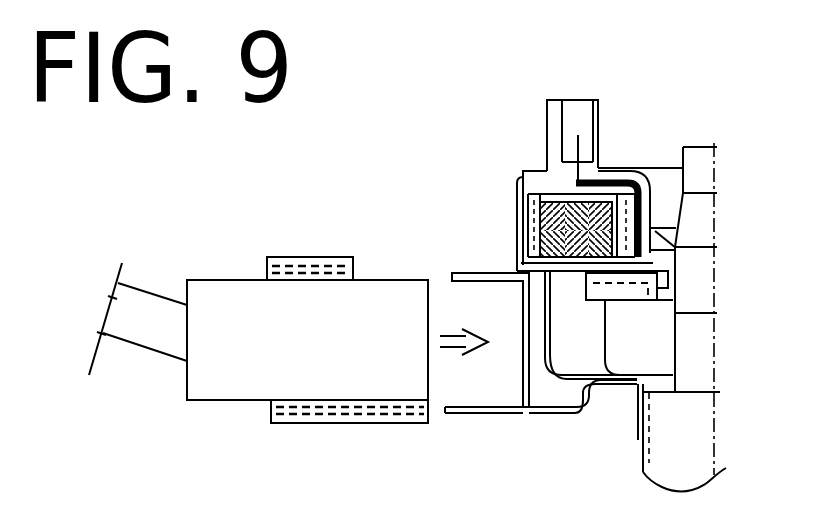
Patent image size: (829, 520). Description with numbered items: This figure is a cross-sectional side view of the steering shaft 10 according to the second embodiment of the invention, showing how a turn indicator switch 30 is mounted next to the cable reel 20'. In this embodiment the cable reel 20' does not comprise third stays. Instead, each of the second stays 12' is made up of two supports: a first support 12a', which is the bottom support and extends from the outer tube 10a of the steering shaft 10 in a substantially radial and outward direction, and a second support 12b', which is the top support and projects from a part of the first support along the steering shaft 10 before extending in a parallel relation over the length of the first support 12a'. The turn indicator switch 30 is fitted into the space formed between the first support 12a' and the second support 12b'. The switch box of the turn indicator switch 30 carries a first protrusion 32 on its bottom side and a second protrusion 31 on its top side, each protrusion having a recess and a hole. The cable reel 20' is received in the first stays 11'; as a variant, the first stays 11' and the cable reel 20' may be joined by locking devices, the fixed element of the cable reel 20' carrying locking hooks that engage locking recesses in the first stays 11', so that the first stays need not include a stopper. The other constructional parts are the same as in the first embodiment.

The steering shaft 10 is at (711, 330).
The outer tube 10a is at (650, 443).
The first stays 11' is at (626, 323).
The second stays 12' is at (587, 373).
The first support 12a' is at (540, 428).
The second support 12b' is at (477, 295).
The cable reel 20' is at (602, 180).
The turn indicator switch 30 is at (224, 408).
The second protrusion 31 is at (300, 257).
The first protrusion 32 is at (315, 423).